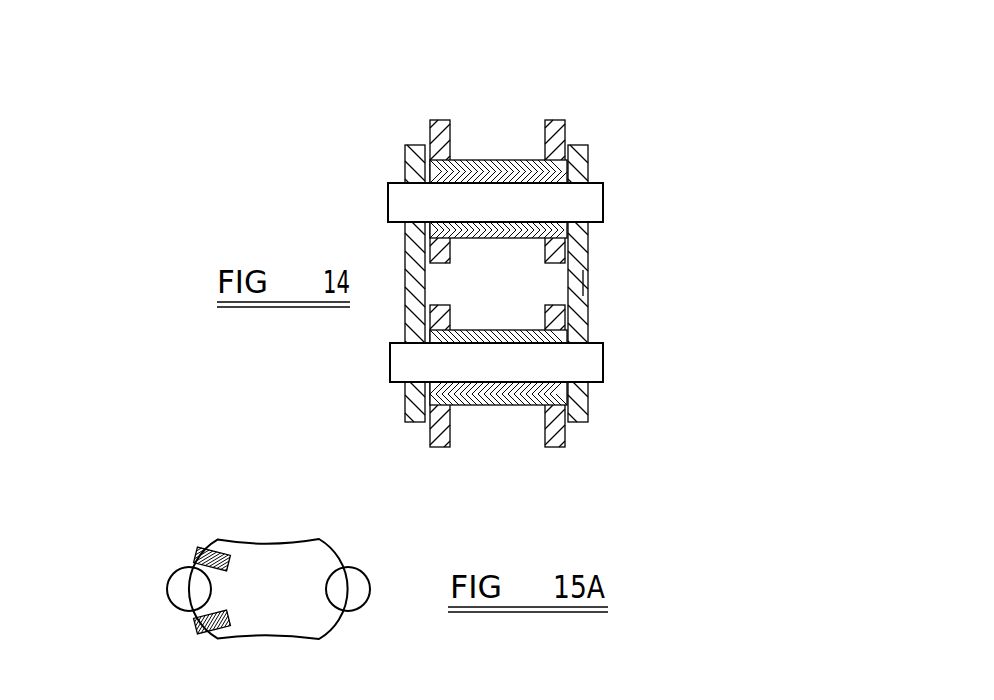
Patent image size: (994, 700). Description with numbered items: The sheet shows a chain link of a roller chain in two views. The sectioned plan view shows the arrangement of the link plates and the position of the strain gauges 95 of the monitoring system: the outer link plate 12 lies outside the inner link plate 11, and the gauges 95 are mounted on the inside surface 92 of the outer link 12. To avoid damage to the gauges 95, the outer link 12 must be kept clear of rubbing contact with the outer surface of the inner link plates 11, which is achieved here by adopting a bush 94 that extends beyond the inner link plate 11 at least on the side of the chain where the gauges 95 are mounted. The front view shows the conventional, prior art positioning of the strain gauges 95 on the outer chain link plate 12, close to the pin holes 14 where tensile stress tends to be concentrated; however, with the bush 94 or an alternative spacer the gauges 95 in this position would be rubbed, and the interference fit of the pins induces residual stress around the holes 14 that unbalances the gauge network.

In FIG. 14, the inner link plate 11 is at (435, 128).
In FIG. 14, the outer link plate 12 is at (412, 170).
In FIG. 15A, the outer link plate 12 is at (163, 540).
In FIG. 15A, the pin holes 14 is at (188, 589).
In FIG. 14, the inside surface of the outer link 92 is at (563, 173).
In FIG. 14, the bush 94 is at (588, 173).
In FIG. 14, the strain gauges 95 is at (583, 283).
In FIG. 15A, the strain gauges 95 is at (210, 547).